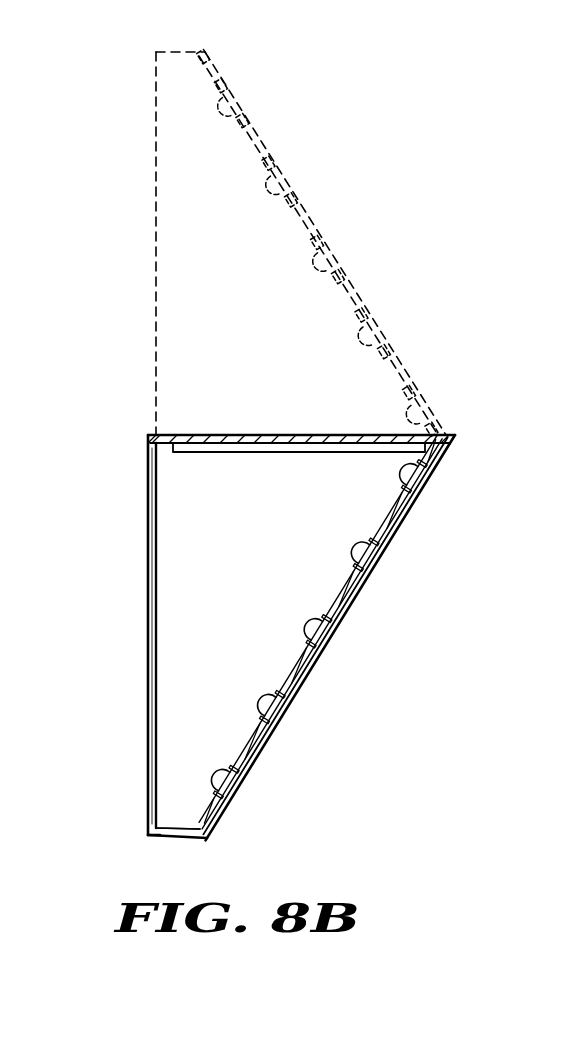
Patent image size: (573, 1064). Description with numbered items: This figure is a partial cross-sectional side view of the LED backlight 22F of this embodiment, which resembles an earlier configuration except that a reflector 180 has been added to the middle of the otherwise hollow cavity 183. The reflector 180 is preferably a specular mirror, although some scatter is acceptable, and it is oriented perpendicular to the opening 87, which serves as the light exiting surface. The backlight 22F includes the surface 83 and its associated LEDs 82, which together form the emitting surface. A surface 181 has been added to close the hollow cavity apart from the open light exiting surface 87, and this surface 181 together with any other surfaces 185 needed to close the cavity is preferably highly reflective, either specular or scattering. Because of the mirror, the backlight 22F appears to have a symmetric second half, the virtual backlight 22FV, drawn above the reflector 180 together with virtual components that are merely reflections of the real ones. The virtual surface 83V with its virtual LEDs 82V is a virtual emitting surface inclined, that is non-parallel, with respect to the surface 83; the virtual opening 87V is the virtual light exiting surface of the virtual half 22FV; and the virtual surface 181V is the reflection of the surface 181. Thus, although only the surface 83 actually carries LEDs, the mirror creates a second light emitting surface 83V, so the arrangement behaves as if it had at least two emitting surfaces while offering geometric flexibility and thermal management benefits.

The backlight 22F is at (120, 428).
The virtual backlight 22FV is at (122, 322).
The opening 87 is at (116, 627).
The virtual opening 87V is at (122, 247).
The reflector 180 is at (255, 455).
The surface 181 is at (191, 831).
The virtual surface 181V is at (184, 51).
The hollow cavity 183 is at (178, 734).
The surfaces 185 is at (250, 583).
The LEDs 82 is at (365, 545).
The virtual LEDs 82V is at (322, 272).
The surface 83 is at (300, 663).
The virtual surface 83V is at (262, 158).